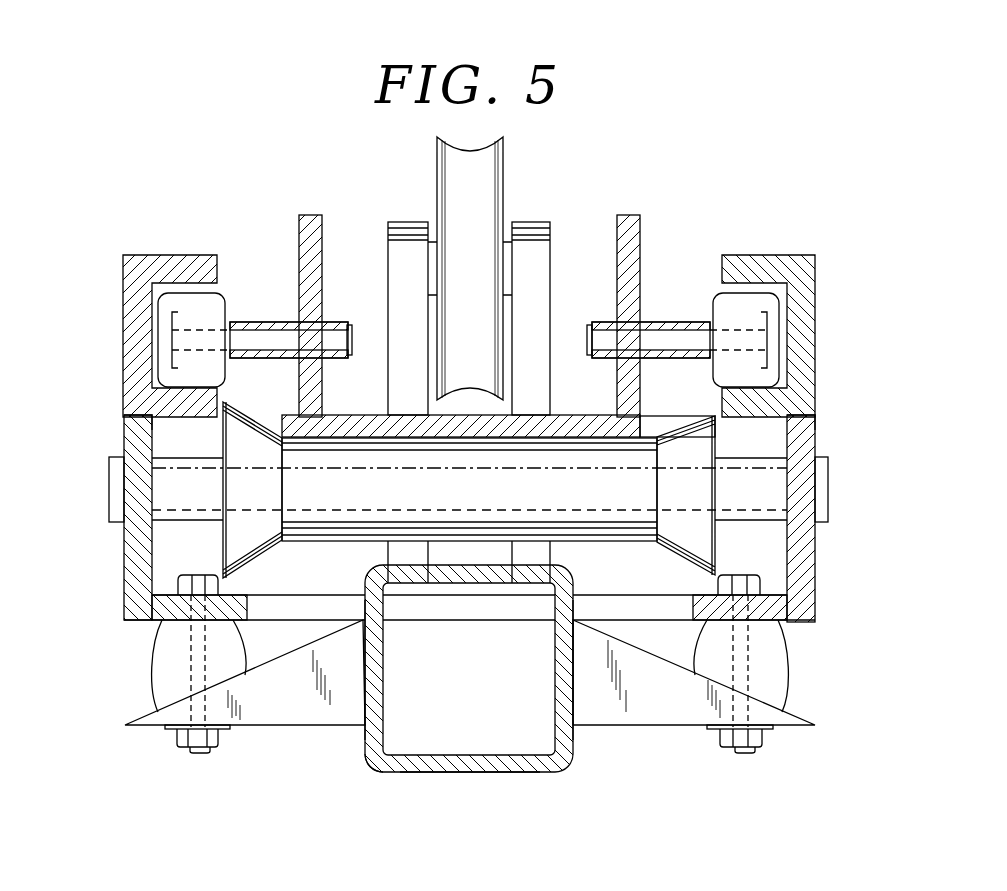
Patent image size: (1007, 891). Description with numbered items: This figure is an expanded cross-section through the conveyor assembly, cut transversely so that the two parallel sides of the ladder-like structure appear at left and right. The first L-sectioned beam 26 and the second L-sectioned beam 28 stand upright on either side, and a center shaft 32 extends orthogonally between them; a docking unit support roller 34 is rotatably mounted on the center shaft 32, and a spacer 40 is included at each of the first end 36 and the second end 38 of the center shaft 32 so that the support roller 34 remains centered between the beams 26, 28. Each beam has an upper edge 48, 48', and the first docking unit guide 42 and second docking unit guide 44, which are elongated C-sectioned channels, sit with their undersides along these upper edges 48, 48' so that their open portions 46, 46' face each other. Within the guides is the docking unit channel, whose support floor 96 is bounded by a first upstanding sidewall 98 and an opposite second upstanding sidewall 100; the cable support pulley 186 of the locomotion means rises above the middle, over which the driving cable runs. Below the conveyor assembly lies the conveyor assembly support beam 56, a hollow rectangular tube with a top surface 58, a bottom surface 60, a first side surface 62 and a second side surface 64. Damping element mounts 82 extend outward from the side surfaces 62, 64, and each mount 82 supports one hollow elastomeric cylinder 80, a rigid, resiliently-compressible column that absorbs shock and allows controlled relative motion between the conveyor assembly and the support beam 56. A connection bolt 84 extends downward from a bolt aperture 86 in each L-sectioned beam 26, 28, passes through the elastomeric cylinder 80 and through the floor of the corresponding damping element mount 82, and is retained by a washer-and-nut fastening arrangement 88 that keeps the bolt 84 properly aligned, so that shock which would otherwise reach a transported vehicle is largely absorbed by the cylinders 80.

The cable support pulley 186 is at (488, 185).
The first upstanding sidewall 98 is at (300, 235).
The second upstanding sidewall 100 is at (632, 243).
The first docking unit guide 42 is at (142, 272).
The second docking unit guide 44 is at (800, 320).
The open portion 46 is at (192, 297).
The open portion 46' is at (743, 295).
The upper edge 48 is at (96, 406).
The upper edge 48' is at (845, 402).
The support floor 96 is at (567, 417).
The first L-sectioned beam 26 is at (130, 565).
The second L-sectioned beam 28 is at (802, 580).
The bolt aperture 86 is at (190, 608).
The first end 36 is at (115, 487).
The second end 38 is at (827, 488).
The spacer 40 is at (175, 513).
The docking unit support roller 34 is at (303, 452).
The center shaft 32 is at (640, 490).
The top surface 58 is at (482, 565).
The first side surface 62 is at (363, 675).
The second side surface 64 is at (573, 685).
The conveyor assembly support beam 56 is at (385, 763).
The bottom surface 60 is at (480, 772).
The connection bolt 84 is at (190, 652).
The elastomeric cylinder 80 is at (160, 678).
The damping element mount 82 is at (253, 713).
The washer-and-nut fastening arrangement 88 is at (157, 753).